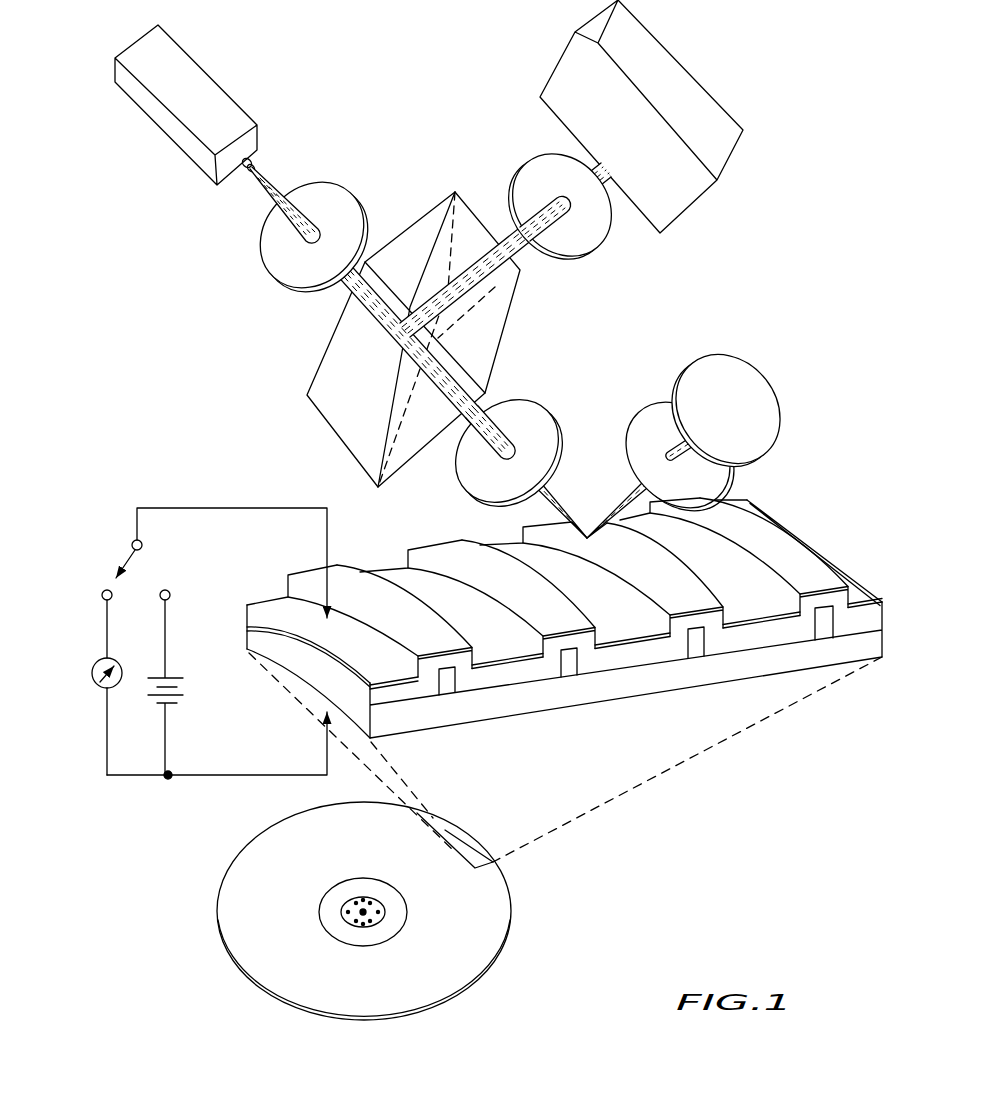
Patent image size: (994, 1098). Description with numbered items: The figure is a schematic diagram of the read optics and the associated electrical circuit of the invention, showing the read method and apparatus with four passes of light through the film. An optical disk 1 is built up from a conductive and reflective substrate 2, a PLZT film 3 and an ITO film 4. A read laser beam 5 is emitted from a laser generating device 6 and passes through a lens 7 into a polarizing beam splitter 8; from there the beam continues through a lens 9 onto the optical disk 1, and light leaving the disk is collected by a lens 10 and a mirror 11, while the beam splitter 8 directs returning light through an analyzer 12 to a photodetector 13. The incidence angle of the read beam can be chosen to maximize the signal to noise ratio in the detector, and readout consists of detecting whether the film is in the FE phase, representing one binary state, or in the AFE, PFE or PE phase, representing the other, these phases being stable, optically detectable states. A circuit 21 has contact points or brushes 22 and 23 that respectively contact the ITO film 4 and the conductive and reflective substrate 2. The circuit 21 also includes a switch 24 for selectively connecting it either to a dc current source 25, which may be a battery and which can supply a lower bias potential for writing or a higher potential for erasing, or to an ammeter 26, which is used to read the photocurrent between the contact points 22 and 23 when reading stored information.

The optical disk 1 is at (564, 614).
The conductive and reflective substrate 2 is at (518, 705).
The PLZT film 3 is at (630, 662).
The ITO film 4 is at (803, 530).
The read laser beam 5 is at (265, 198).
The laser generating device 6 is at (238, 98).
The lens 7 is at (327, 175).
The polarizing beam splitter 8 is at (307, 385).
The lens 9 is at (517, 392).
The lens 10 is at (623, 437).
The mirror 11 is at (760, 372).
The analyzer 12 is at (605, 255).
The photodetector 13 is at (727, 173).
The circuit 21 is at (192, 503).
The contact point 22 is at (323, 710).
The contact point 23 is at (313, 612).
The switch 24 is at (125, 540).
The dc current source 25 is at (177, 705).
The ammeter 26 is at (117, 692).